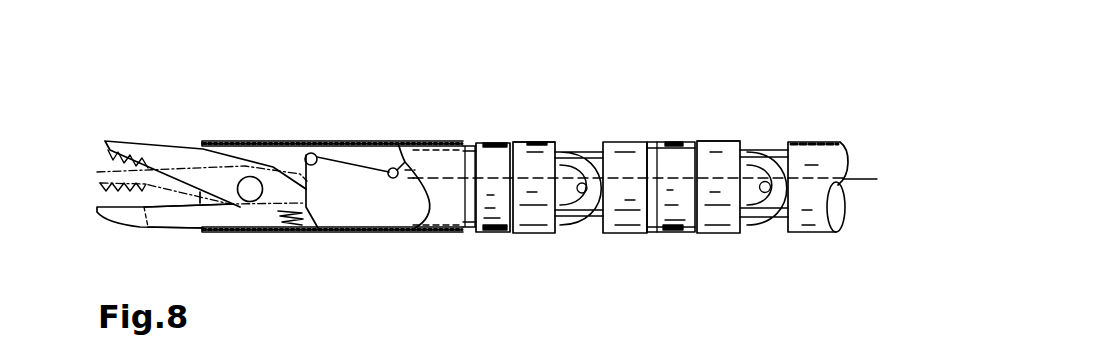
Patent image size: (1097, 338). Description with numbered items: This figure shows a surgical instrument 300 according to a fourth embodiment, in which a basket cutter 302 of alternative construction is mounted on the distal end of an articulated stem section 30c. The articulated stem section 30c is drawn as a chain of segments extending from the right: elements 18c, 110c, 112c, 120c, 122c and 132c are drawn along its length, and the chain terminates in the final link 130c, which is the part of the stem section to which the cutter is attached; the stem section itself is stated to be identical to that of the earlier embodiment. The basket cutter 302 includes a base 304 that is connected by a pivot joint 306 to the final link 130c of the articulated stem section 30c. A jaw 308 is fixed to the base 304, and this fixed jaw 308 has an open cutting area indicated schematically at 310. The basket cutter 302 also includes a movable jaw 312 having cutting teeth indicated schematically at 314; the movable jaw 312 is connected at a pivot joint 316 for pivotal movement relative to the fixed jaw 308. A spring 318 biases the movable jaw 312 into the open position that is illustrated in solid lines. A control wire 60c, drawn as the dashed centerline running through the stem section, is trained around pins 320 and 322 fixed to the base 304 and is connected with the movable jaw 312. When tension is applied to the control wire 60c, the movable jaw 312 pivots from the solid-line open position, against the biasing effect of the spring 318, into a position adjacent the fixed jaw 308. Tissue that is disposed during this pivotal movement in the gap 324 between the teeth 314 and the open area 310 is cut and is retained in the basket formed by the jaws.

The surgical instrument 300 is at (501, 111).
The basket cutter 302 is at (319, 78).
The base 304 is at (352, 232).
The pivot joint 306 is at (497, 233).
The fixed jaw 308 is at (165, 229).
The open cutting area 310 is at (99, 206).
The movable jaw 312 is at (157, 139).
The cutting teeth 314 is at (110, 151).
The pivot joint 316 is at (255, 194).
The spring 318 is at (314, 232).
The pin 320 is at (398, 143).
The pin 322 is at (311, 153).
The gap 324 is at (107, 200).
The control wire 60c is at (347, 148).
The final link 130c is at (535, 142).
The hinge joint 132c is at (583, 190).
The link segment 120c is at (625, 142).
The hinge joint 122c is at (676, 229).
The link segment 110c is at (715, 142).
The hinge joint 112c is at (766, 190).
The distal end segment 18c is at (808, 140).
The articulated stem section 30c is at (687, 111).